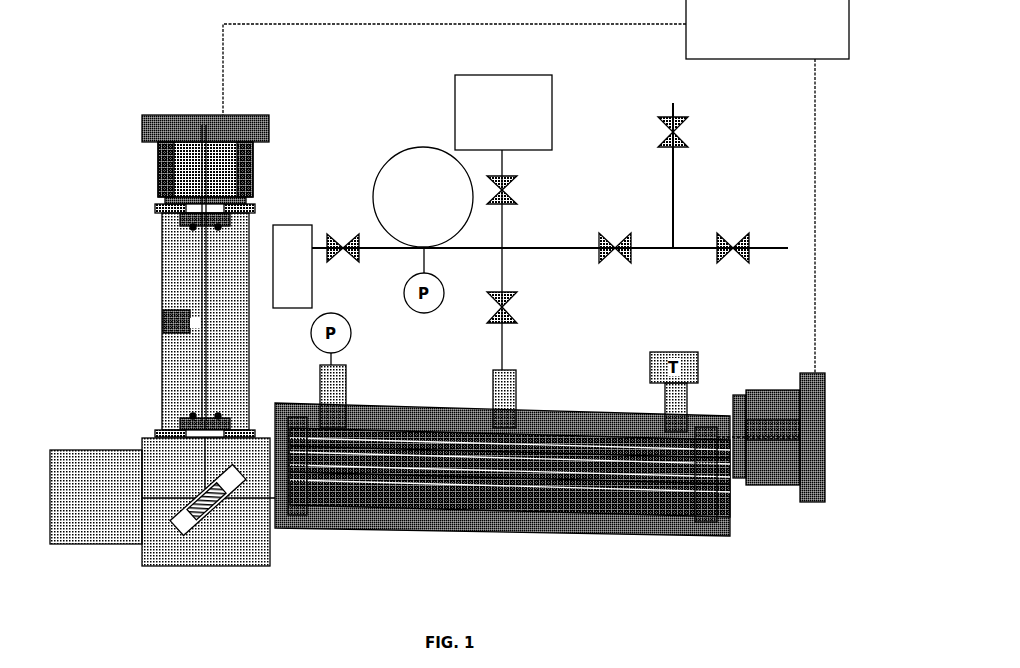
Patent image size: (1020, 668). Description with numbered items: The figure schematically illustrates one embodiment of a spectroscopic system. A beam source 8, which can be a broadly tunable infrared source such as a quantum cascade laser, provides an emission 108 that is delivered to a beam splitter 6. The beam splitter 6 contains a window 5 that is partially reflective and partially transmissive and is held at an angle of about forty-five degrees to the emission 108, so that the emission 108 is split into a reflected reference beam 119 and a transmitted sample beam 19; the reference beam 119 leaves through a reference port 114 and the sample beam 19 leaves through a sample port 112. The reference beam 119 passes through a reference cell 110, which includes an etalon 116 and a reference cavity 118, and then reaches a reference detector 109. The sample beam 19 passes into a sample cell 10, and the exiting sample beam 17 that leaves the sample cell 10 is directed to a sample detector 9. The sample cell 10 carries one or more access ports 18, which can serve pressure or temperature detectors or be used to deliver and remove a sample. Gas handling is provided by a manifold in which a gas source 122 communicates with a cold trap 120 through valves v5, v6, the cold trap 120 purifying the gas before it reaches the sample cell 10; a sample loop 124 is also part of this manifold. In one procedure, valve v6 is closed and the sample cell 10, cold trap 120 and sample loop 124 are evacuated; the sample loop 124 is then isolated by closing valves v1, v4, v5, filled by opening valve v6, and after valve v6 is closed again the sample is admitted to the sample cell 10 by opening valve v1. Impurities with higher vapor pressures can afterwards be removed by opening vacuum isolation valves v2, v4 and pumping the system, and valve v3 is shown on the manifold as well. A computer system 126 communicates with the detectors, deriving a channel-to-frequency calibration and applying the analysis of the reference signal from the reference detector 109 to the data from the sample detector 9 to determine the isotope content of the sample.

The computer system 126 is at (781, 35).
The cold trap 120 is at (516, 121).
The sample loop 124 is at (436, 206).
The gas source 122 is at (288, 228).
The reference detector 109 is at (172, 115).
The reference cavity 118 is at (200, 293).
The reference cell 110 is at (183, 288).
The etalon 116 is at (185, 425).
The emission 108 is at (192, 492).
The beam source 8 is at (100, 505).
The sample port 112 is at (222, 508).
The reference port 114 is at (205, 495).
The reference beam 119 is at (216, 470).
The sample beam 19 is at (232, 498).
The window 5 is at (180, 530).
The beam splitter 6 is at (215, 520).
The sample cell 10 is at (445, 513).
The exiting sample beam 17 is at (718, 425).
The access port 18 is at (518, 372).
The sample detector 9 is at (828, 420).
The valve v1 is at (513, 308).
The vacuum isolation valve v2 is at (735, 238).
The valve v3 is at (686, 138).
The vacuum isolation valve v4 is at (627, 236).
The valve v5 is at (513, 200).
The valve v6 is at (356, 236).